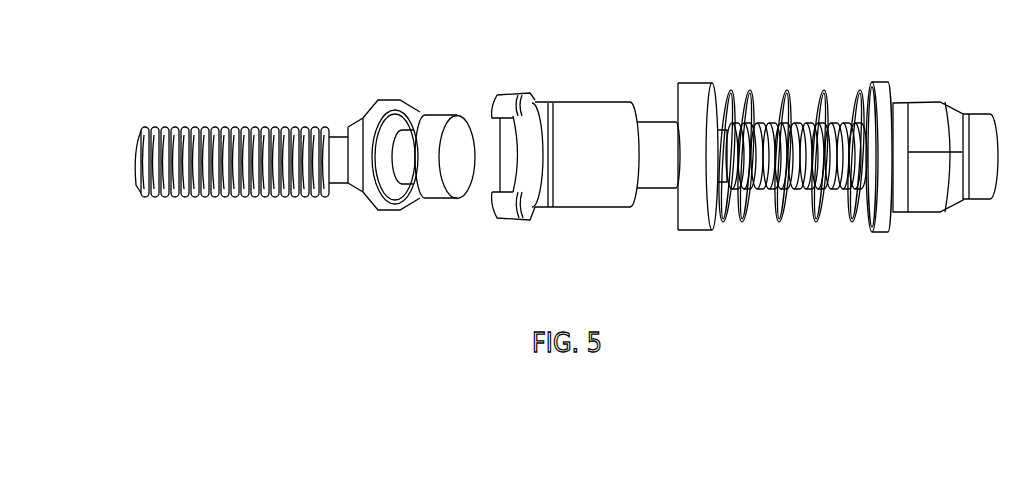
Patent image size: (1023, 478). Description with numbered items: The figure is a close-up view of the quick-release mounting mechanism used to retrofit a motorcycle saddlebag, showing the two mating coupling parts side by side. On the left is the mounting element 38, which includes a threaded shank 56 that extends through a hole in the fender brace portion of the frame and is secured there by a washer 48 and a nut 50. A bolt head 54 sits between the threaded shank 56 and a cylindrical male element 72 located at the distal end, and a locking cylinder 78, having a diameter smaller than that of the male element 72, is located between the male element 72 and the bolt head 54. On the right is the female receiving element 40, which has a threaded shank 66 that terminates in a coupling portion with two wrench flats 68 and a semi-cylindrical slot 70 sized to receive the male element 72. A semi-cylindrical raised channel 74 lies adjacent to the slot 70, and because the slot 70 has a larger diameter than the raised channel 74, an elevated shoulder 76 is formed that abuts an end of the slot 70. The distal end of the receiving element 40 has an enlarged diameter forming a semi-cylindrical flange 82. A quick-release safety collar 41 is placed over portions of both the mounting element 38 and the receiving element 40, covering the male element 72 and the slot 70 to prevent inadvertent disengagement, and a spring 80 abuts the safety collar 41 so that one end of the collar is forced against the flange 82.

The mounting element 38 is at (135, 42).
The receiving element 40 is at (997, 42).
The threaded shank 56 is at (250, 188).
The bolt head 54 is at (372, 197).
The locking cylinder 78 is at (404, 170).
The male element 72 is at (441, 120).
The semi-cylindrical flange 82 is at (525, 97).
The wrench flats 68 is at (606, 103).
The semi-cylindrical raised channel 74 is at (528, 152).
The elevated shoulder 76 is at (525, 215).
The semi-cylindrical slot 70 is at (553, 192).
The quick-release safety collar 41 is at (702, 222).
The spring 80 is at (771, 218).
The threaded shank 66 is at (791, 178).
The washer 48 is at (866, 222).
The nut 50 is at (929, 196).